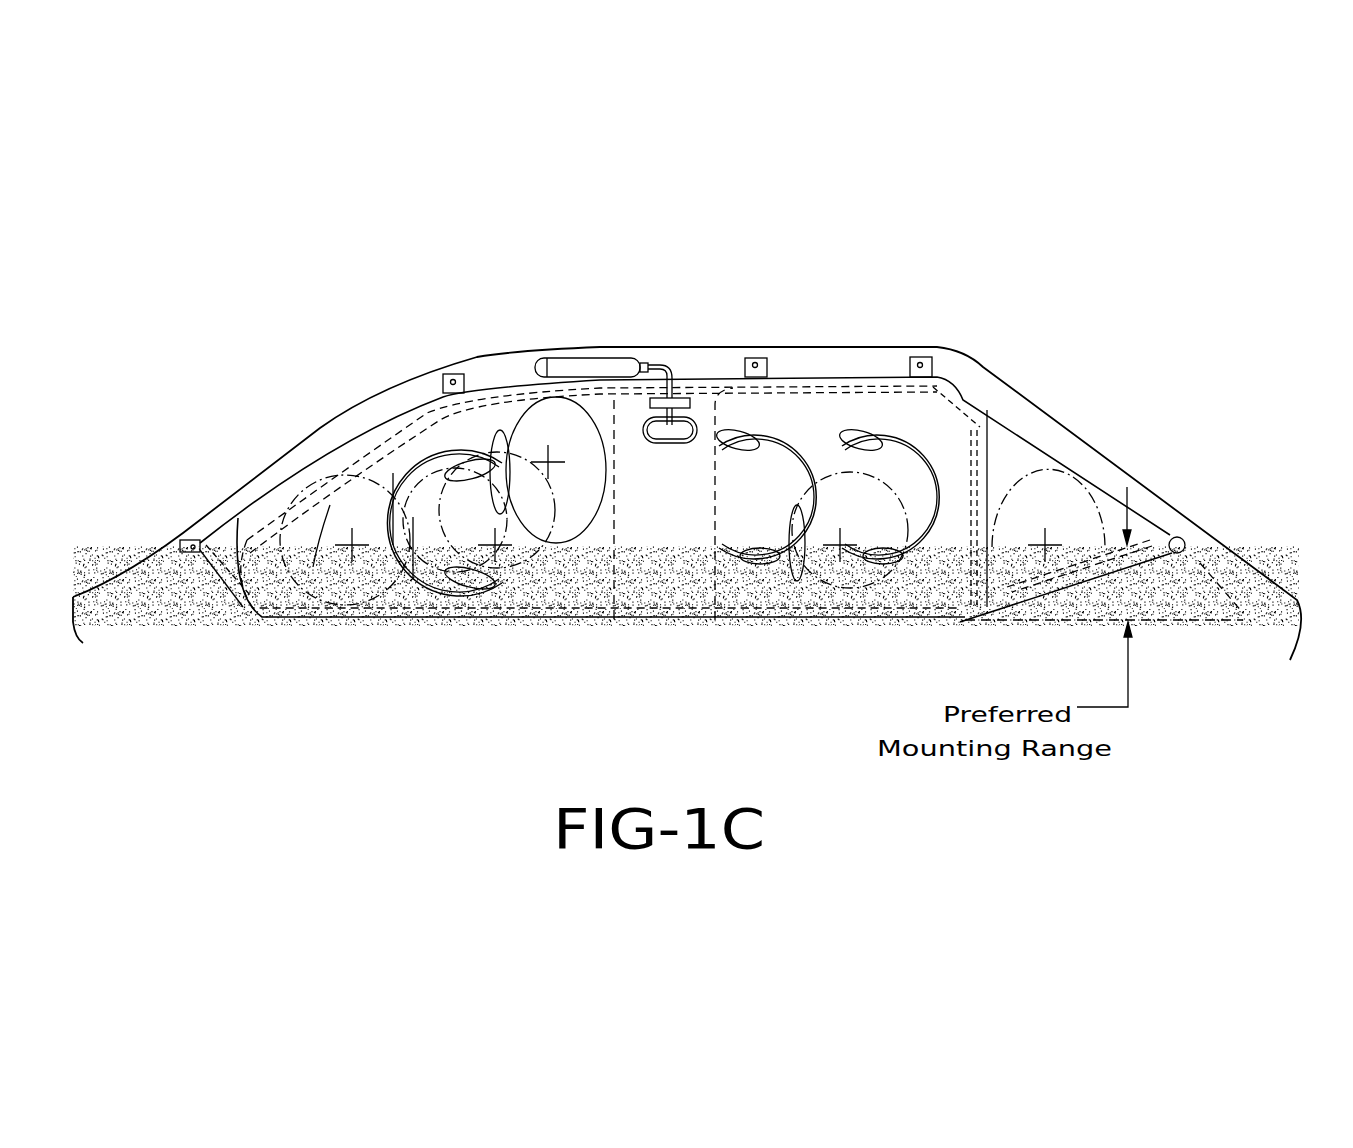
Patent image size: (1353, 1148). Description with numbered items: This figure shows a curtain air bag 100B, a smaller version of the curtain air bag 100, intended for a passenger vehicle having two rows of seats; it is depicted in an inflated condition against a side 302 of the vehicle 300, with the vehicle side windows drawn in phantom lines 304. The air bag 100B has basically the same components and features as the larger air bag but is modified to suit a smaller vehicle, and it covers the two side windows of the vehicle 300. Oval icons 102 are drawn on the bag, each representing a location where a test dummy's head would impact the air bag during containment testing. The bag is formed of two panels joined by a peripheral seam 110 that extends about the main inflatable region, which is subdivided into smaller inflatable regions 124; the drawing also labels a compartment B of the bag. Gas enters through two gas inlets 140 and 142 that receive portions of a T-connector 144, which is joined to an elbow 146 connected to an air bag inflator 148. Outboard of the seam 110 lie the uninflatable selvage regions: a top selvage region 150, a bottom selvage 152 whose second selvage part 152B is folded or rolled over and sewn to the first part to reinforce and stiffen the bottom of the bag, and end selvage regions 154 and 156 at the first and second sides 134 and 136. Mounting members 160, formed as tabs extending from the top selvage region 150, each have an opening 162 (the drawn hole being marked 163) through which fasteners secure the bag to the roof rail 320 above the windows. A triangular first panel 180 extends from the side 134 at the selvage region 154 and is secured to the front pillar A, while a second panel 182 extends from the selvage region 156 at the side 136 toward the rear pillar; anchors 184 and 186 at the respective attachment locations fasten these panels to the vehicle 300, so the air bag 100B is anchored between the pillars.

The curtain air bag 100 is at (962, 405).
The air bag 100B is at (990, 330).
The oval icons 102 is at (294, 505).
The peripheral seam 110 is at (370, 458).
The smaller inflatable regions 124 is at (770, 506).
The first side 134 is at (982, 437).
The second side 136 is at (373, 448).
The gas inlet 140 is at (640, 420).
The gas inlet 142 is at (675, 364).
The T-connector 144 is at (683, 400).
The elbow 146 is at (662, 420).
The air bag inflator 148 is at (557, 363).
The top selvage region 150 is at (945, 437).
The selvage 152 is at (633, 548).
The second selvage part 152B is at (222, 572).
The selvage region 154 is at (992, 497).
The selvage region 156 is at (288, 495).
The mounting members 160 is at (463, 380).
The opening 162 is at (543, 610).
The bracket hole 163 is at (450, 380).
The first panel 180 is at (1073, 500).
The second panel 182 is at (232, 537).
The anchor 184 is at (1185, 543).
The anchor 186 is at (180, 543).
The vehicle 300 is at (1268, 288).
The side of the vehicle 302 is at (822, 350).
The side windows 304 is at (443, 623).
The roof rail 320 is at (864, 372).
The front pillar A is at (1167, 510).
The region B is at (680, 514).